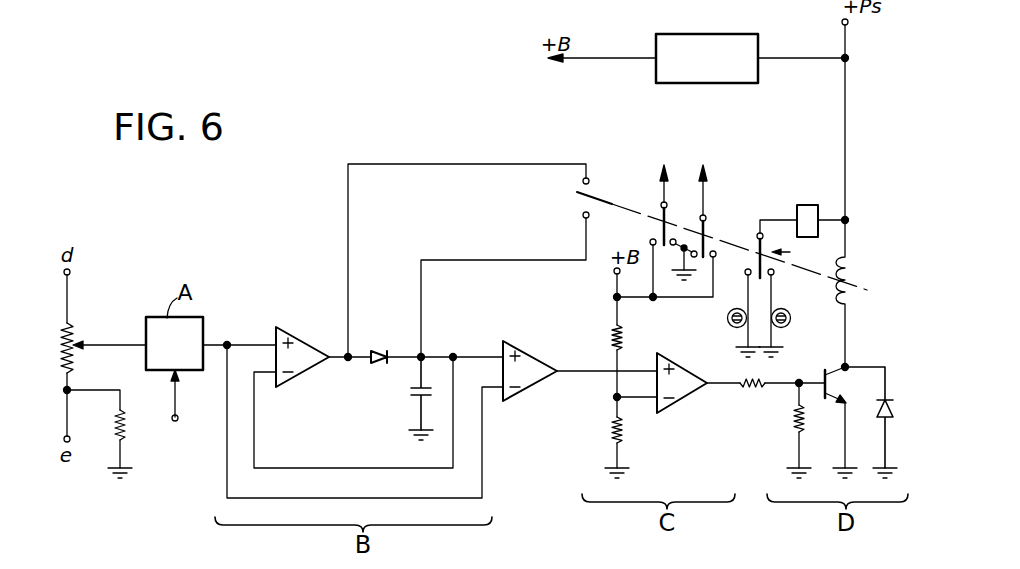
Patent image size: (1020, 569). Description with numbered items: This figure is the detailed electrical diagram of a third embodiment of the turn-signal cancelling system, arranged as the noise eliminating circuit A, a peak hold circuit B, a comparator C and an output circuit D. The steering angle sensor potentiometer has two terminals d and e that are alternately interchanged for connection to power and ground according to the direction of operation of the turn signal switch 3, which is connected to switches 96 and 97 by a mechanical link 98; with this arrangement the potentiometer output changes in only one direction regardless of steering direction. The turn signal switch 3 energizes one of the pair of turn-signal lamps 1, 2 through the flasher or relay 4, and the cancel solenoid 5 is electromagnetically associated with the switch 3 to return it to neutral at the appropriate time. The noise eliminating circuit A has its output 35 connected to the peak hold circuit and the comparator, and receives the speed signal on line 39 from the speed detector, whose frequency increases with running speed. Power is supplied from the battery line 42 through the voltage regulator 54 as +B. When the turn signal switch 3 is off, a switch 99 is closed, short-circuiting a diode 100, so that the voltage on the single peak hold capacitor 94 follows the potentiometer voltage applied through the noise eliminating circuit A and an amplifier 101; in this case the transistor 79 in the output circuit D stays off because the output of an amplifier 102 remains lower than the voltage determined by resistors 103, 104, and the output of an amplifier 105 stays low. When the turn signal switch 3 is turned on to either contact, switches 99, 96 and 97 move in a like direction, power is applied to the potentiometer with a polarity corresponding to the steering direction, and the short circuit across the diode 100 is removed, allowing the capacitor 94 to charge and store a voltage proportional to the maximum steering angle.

The turn-signal lamp 1 is at (727, 322).
The turn-signal lamp 2 is at (791, 322).
The turn signal switch 3 is at (790, 253).
The flasher or relay 4 is at (806, 205).
The cancel solenoid 5 is at (850, 270).
The output of noise eliminating circuit 35 is at (218, 343).
The speed signal line 39 is at (172, 393).
The power supply line 42 is at (848, 216).
The voltage regulator 54 is at (689, 85).
The transistor 79 is at (823, 393).
The peak hold capacitor 94 is at (413, 393).
The switch 96 is at (660, 215).
The switch 97 is at (705, 228).
The mechanical link 98 is at (728, 242).
The switch 99 is at (583, 197).
The diode 100 is at (380, 349).
The amplifier 101 is at (306, 336).
The amplifier 102 is at (533, 392).
The resistor 103 is at (610, 334).
The resistor 104 is at (609, 430).
The amplifier 105 is at (694, 402).